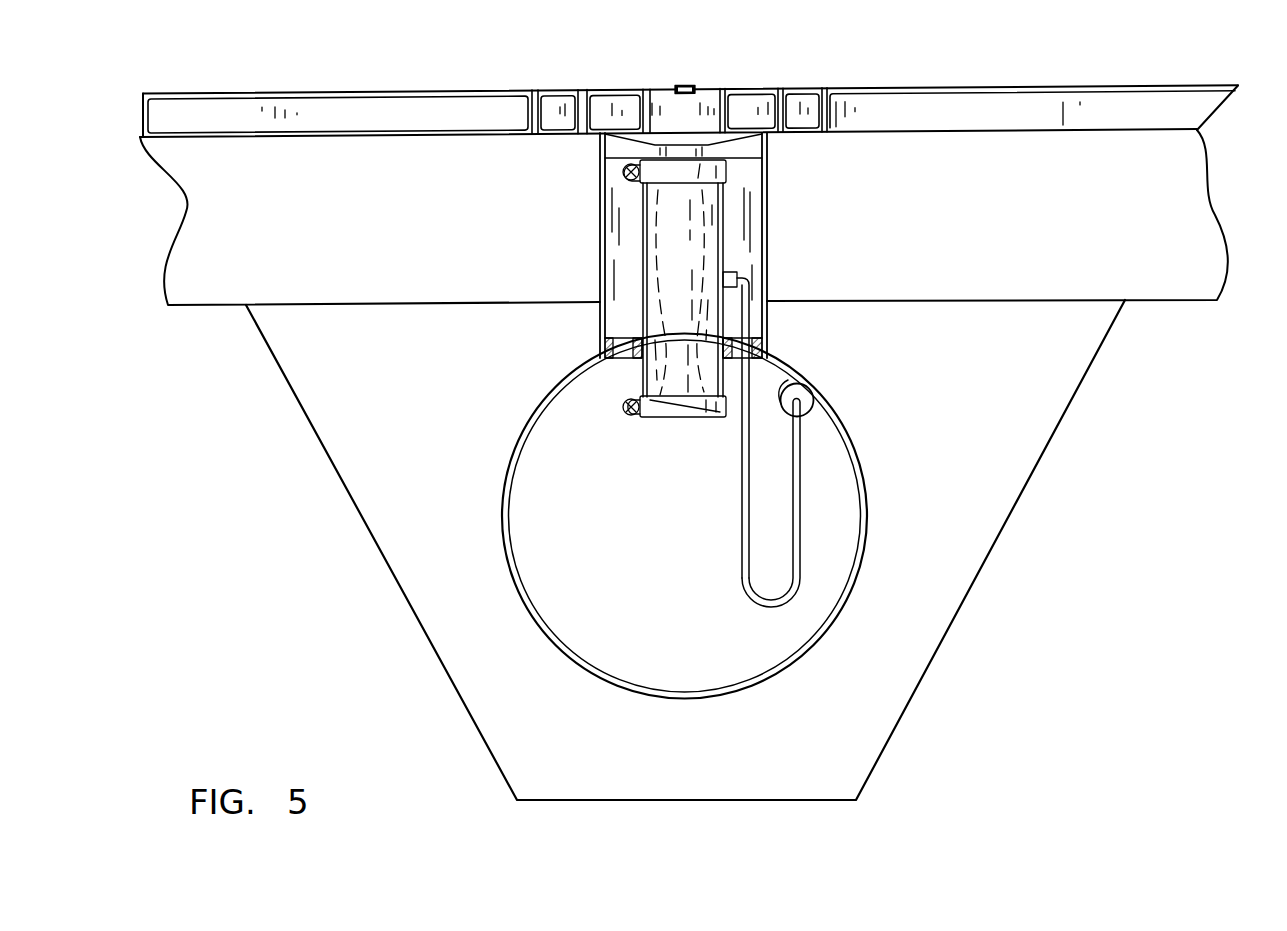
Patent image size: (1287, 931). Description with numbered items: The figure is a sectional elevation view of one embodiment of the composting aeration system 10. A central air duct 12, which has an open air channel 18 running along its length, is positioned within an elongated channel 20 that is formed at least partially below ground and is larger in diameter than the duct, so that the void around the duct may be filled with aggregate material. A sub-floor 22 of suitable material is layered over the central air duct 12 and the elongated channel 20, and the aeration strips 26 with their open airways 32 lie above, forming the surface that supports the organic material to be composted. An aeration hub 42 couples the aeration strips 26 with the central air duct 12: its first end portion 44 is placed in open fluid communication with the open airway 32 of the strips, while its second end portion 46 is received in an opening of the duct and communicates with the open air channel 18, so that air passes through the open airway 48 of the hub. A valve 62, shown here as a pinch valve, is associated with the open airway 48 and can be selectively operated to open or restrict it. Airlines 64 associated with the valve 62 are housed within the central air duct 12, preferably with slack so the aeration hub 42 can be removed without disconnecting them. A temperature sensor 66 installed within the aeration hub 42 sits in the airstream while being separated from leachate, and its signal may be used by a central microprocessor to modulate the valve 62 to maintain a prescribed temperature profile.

The composting aeration system 10 is at (1032, 69).
The central air duct 12 is at (848, 607).
The open air channel 18 is at (740, 532).
The elongated channel 20 is at (965, 531).
The sub-floor 22 is at (1168, 175).
The aeration strips 26 is at (905, 93).
The open airway 32 is at (1034, 130).
The aeration hub 42 is at (768, 164).
The first end portion 44 is at (707, 93).
The second end portion 46 is at (780, 352).
The open airway 48 is at (677, 212).
The valve 62 is at (667, 423).
The airlines 64 is at (645, 517).
The temperature sensor 66 is at (685, 90).